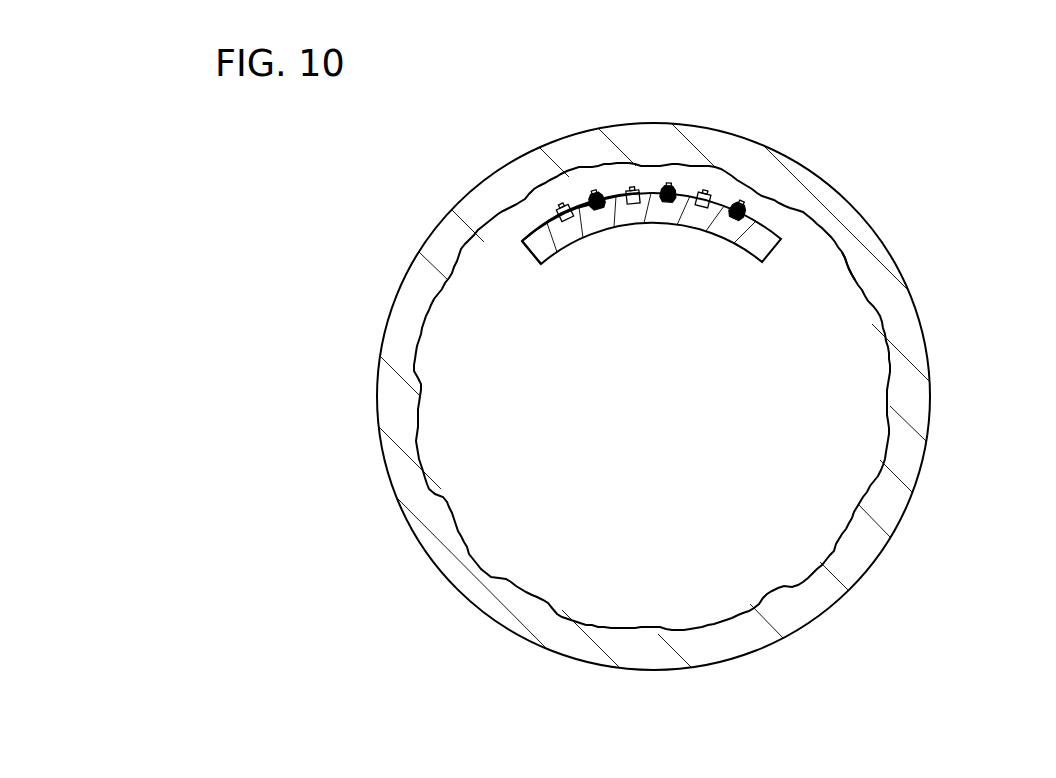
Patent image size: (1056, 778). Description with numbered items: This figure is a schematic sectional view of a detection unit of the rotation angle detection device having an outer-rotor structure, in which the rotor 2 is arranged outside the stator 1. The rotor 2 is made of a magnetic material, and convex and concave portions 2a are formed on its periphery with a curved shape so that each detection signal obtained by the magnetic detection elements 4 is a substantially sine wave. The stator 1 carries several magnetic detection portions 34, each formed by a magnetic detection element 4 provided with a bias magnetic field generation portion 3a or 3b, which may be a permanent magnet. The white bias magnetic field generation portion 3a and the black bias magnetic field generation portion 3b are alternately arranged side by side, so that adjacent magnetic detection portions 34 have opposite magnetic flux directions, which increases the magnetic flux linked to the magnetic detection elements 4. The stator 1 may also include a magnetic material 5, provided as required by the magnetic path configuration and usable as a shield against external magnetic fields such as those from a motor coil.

The stator 1 is at (710, 248).
The rotor 2 is at (917, 387).
The convex and concave portions 2a is at (847, 277).
The bias magnetic field generation portion 3a is at (553, 210).
The bias magnetic field generation portion 3b is at (604, 208).
The magnetic detection element 4 is at (565, 206).
The magnetic material 5 is at (540, 266).
The magnetic detection portion 34 is at (560, 220).